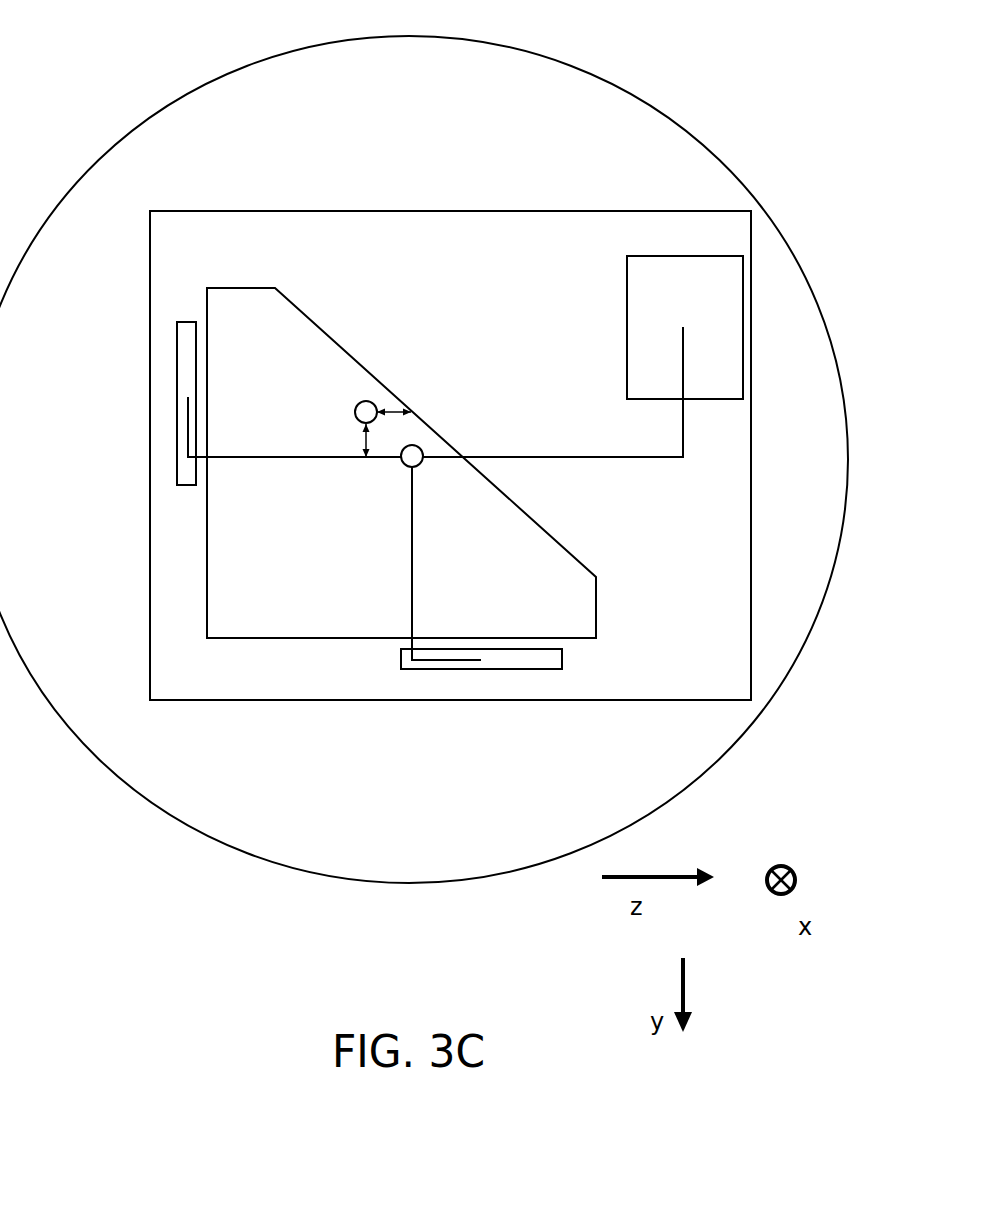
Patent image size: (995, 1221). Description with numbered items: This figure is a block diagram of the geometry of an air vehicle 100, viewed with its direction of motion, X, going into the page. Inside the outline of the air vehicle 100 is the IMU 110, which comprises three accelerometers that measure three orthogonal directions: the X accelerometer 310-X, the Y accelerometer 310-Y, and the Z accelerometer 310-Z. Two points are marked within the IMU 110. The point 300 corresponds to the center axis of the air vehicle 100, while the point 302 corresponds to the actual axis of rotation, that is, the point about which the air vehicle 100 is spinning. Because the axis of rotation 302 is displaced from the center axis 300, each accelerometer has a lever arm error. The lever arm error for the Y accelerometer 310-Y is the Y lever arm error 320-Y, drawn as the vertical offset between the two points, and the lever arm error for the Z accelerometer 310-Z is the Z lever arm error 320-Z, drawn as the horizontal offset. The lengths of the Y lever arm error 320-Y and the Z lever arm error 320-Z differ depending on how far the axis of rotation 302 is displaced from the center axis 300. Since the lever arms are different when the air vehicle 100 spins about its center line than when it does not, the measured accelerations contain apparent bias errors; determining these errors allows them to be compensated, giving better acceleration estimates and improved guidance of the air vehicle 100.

The air vehicle 100 is at (675, 123).
The IMU 110 is at (481, 257).
The Z accelerometer 310-Z is at (182, 322).
The X accelerometer 310-X is at (627, 360).
The Y accelerometer 310-Y is at (562, 659).
The axis of rotation 302 is at (357, 403).
The center axis 300 is at (423, 462).
The dlev_z 320-Z is at (400, 410).
The dlev_y 320-Y is at (362, 440).